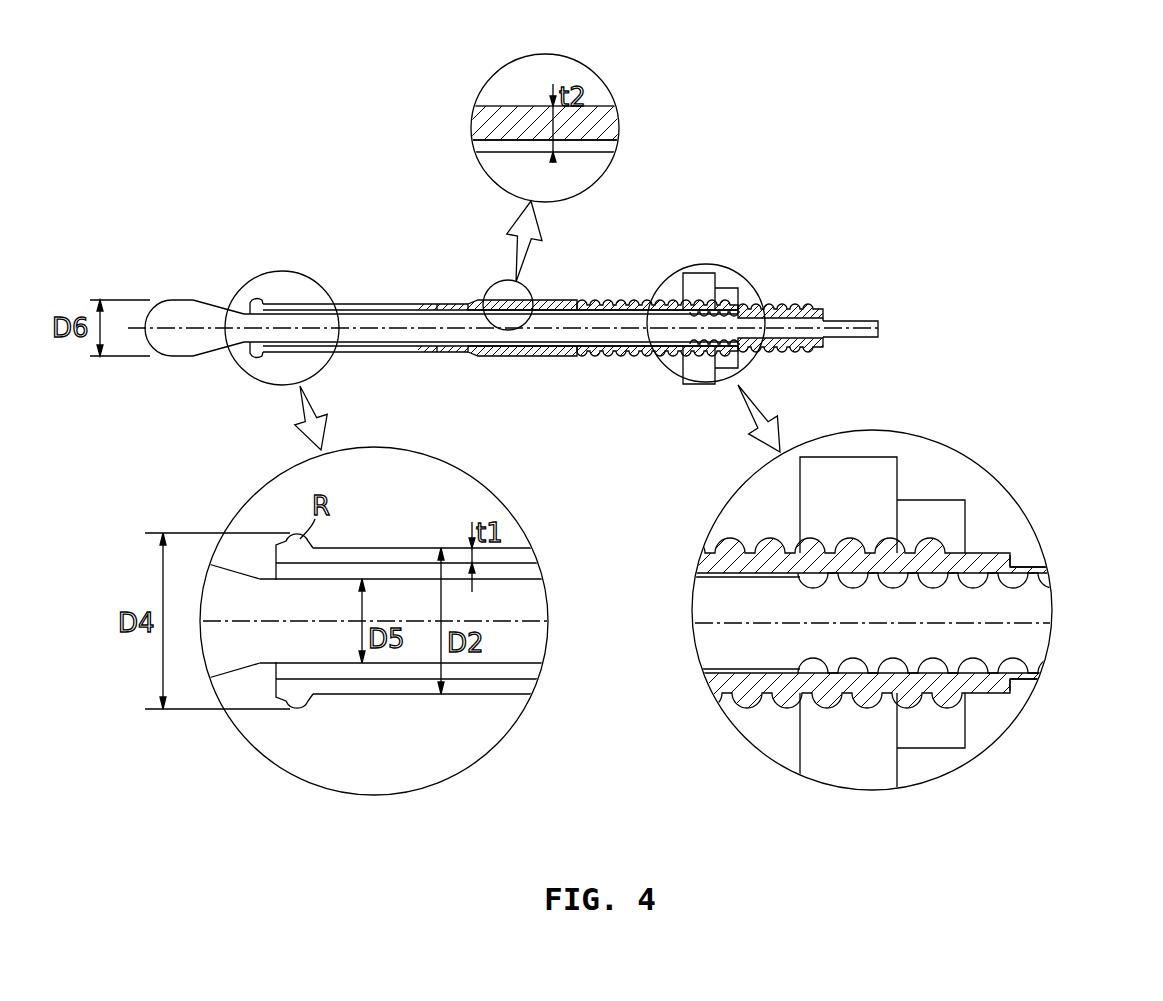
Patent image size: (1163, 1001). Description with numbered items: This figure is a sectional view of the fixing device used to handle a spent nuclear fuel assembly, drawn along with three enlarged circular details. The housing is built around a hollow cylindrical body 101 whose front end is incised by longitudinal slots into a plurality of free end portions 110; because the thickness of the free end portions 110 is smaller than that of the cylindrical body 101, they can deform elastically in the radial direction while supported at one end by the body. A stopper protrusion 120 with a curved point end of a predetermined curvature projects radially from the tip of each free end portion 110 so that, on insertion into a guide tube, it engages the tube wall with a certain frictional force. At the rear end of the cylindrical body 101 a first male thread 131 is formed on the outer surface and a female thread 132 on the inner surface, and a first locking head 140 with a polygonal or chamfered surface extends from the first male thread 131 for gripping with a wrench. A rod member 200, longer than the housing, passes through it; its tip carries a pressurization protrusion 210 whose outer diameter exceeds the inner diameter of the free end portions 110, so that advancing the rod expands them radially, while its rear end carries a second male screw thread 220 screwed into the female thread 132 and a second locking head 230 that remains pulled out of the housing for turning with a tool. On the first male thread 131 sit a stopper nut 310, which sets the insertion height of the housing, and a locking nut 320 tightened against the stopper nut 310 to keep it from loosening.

The hollow cylindrical body 101 is at (522, 105).
The free end portions 110 is at (363, 304).
The stopper protrusion 120 is at (296, 704).
The first male thread 131 is at (628, 300).
The female thread 132 is at (1012, 590).
The first locking head 140 is at (790, 307).
The rod member 200 is at (495, 168).
The pressurization protrusion 210 is at (195, 300).
The second male screw thread 220 is at (1003, 694).
The second locking head 230 is at (858, 321).
The stopper nut 310 is at (850, 457).
The locking nut 320 is at (937, 500).